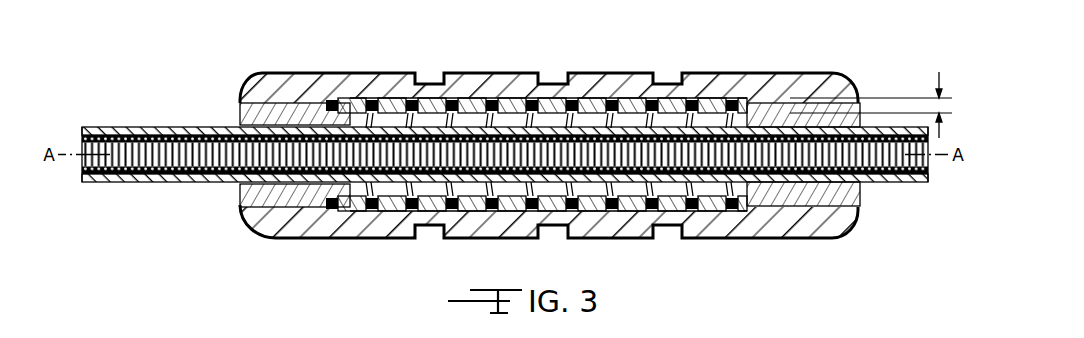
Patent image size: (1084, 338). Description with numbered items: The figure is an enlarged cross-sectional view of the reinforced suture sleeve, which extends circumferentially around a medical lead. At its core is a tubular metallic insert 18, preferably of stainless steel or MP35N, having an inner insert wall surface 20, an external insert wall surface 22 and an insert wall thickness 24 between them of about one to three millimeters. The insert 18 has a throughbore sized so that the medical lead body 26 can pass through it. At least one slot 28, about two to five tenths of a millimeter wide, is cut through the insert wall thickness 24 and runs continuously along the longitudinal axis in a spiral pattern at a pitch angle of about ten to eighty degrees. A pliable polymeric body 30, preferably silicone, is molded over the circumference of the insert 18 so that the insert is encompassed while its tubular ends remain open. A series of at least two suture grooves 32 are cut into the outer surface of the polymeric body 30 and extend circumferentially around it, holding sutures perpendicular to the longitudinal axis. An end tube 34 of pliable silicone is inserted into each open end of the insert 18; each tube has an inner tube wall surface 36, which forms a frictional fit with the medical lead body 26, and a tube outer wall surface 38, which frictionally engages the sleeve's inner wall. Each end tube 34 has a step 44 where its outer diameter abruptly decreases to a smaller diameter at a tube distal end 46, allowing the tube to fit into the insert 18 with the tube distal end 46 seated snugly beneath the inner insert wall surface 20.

The insert 18 is at (708, 102).
The inner insert wall surface 20 is at (728, 211).
The external insert wall surface 22 is at (693, 211).
The insert wall thickness 24 is at (871, 89).
The medical lead body 26 is at (135, 127).
The slot 28 is at (460, 119).
The polymeric body 30 is at (388, 80).
The suture grooves 32 is at (550, 78).
The end tube 34 is at (237, 207).
The inner tube wall surface 36 is at (240, 111).
The tube outer wall surface 38 is at (277, 97).
The step 44 is at (320, 212).
The tube distal end 46 is at (305, 117).